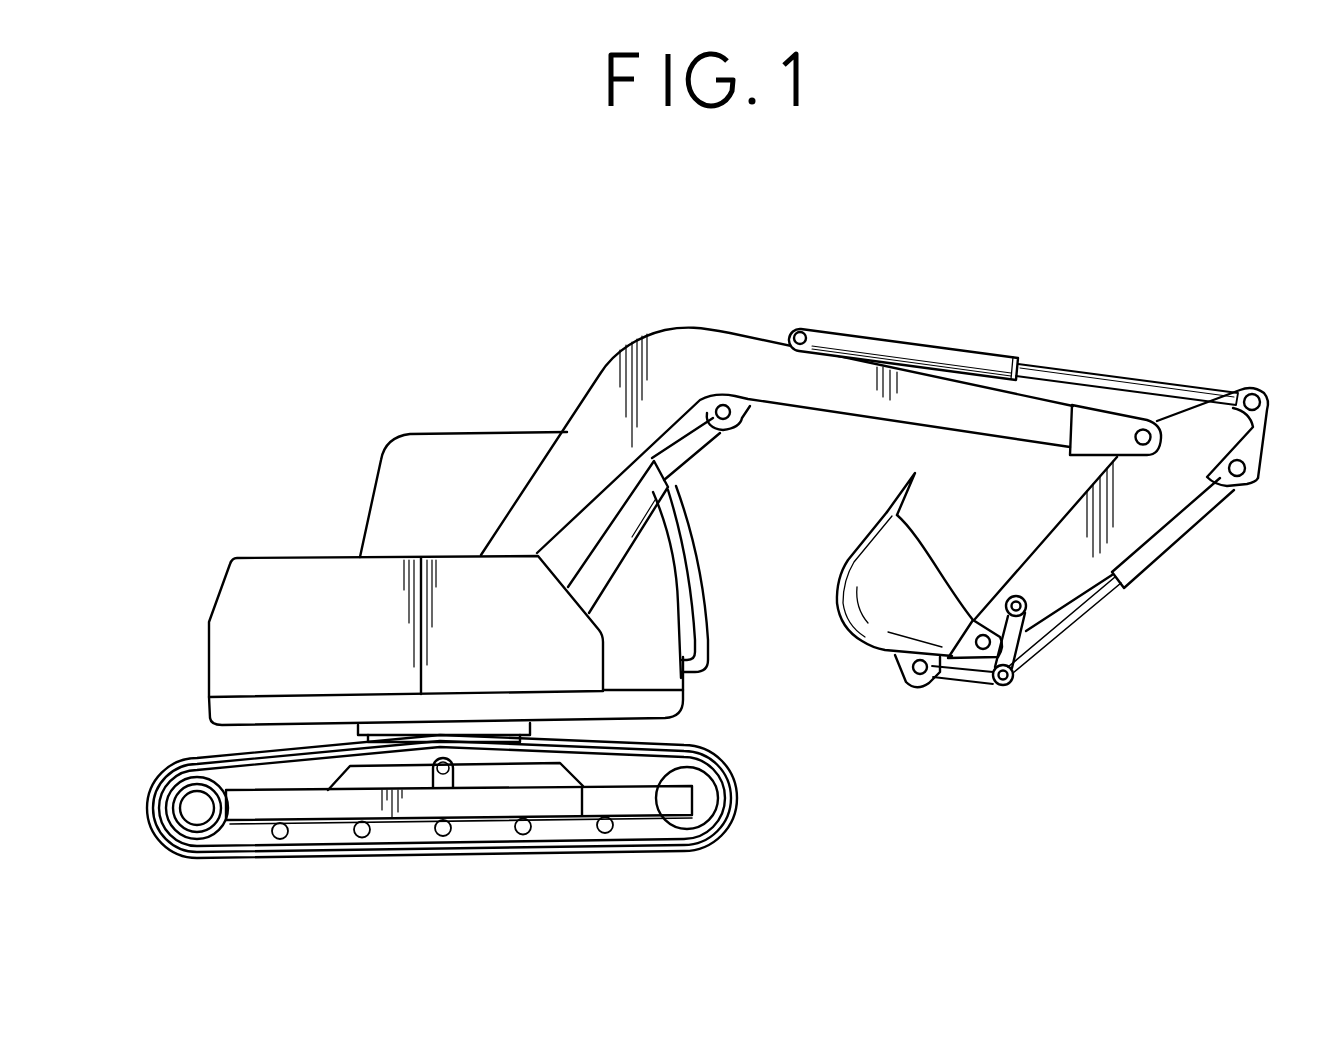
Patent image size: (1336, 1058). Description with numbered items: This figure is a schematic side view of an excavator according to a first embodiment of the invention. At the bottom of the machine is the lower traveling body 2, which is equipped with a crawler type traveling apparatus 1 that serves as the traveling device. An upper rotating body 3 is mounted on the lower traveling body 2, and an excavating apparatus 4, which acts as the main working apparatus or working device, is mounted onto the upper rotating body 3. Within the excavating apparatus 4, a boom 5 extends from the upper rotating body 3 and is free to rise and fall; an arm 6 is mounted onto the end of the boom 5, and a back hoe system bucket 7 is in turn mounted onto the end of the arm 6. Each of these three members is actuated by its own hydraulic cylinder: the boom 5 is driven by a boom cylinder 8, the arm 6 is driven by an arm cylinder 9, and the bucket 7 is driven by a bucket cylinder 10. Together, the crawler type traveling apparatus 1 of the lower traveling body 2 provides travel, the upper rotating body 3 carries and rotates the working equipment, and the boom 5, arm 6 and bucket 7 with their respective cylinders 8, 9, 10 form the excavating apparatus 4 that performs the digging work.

The crawler type traveling apparatus 1 is at (483, 823).
The lower traveling body 2 is at (748, 798).
The upper rotating body 3 is at (402, 422).
The excavating apparatus 4 is at (717, 328).
The boom 5 is at (600, 400).
The arm 6 is at (1142, 503).
The bucket 7 is at (850, 643).
The boom cylinder 8 is at (707, 452).
The arm cylinder 9 is at (947, 347).
The bucket cylinder 10 is at (1150, 570).